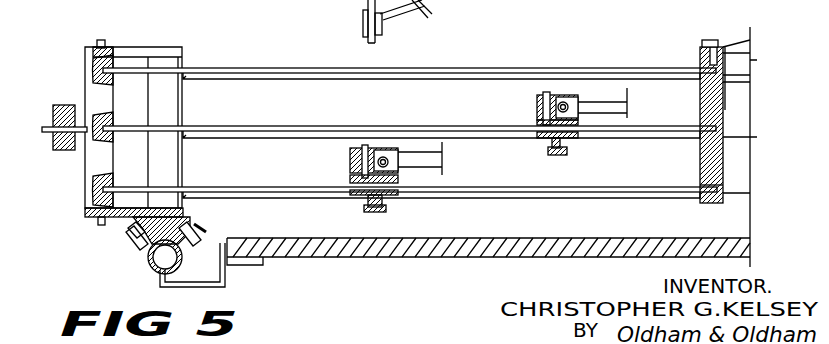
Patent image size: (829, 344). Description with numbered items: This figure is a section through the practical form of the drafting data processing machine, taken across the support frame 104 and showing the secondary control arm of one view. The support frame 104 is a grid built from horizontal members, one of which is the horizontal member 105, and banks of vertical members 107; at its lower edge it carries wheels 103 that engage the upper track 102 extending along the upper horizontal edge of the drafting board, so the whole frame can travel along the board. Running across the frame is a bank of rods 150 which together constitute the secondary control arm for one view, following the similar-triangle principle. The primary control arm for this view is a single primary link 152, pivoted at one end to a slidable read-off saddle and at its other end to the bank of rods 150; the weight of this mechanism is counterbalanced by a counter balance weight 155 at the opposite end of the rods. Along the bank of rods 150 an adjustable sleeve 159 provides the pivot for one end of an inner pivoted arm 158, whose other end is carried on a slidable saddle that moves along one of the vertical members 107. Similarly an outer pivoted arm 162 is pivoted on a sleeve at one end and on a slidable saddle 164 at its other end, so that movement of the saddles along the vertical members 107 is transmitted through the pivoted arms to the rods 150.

The upper track 102 is at (150, 262).
The wheels 103 is at (130, 228).
The support frame 104 is at (733, 126).
The horizontal member 105 is at (185, 222).
The vertical members 107 is at (727, 128).
The bank of rods 150 is at (474, 68).
The primary link 152 is at (728, 45).
The counter balance weight 155 is at (61, 104).
The inner pivoted arm 158 is at (442, 162).
The adjustable sleeve 159 is at (385, 197).
The outer pivoted arm 162 is at (602, 103).
The slidable saddle 164 is at (537, 118).